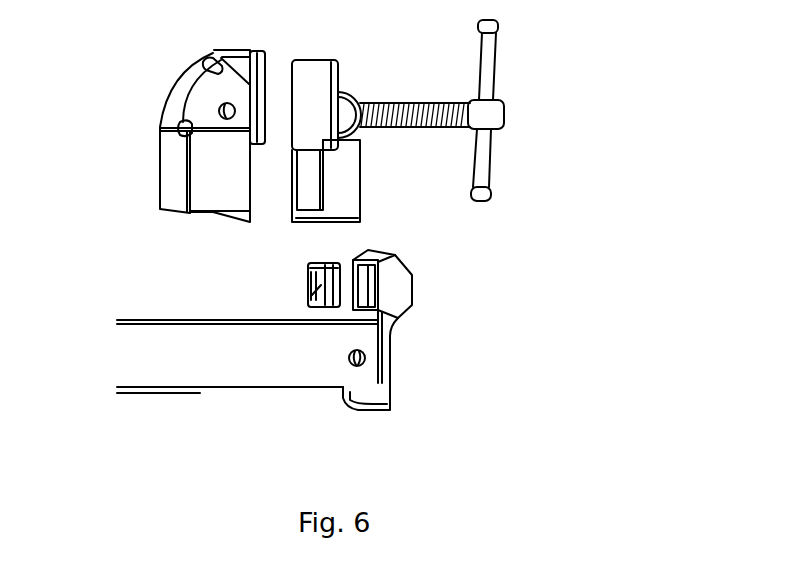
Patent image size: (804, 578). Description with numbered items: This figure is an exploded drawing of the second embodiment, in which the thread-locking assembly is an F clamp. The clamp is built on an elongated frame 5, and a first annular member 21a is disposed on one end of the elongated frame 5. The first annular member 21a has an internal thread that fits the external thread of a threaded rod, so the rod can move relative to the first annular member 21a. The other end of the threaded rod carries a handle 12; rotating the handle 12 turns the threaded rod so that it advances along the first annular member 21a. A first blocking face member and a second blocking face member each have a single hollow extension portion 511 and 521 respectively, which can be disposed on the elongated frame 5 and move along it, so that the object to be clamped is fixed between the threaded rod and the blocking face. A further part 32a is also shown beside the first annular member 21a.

The rear clamp head 511 is at (177, 170).
The front jaw block 521 is at (308, 182).
The threaded spindle with T-handle 12 is at (482, 160).
The rail bar 5 is at (228, 363).
The end stop block 21a is at (383, 290).
The slider block 32a is at (328, 278).